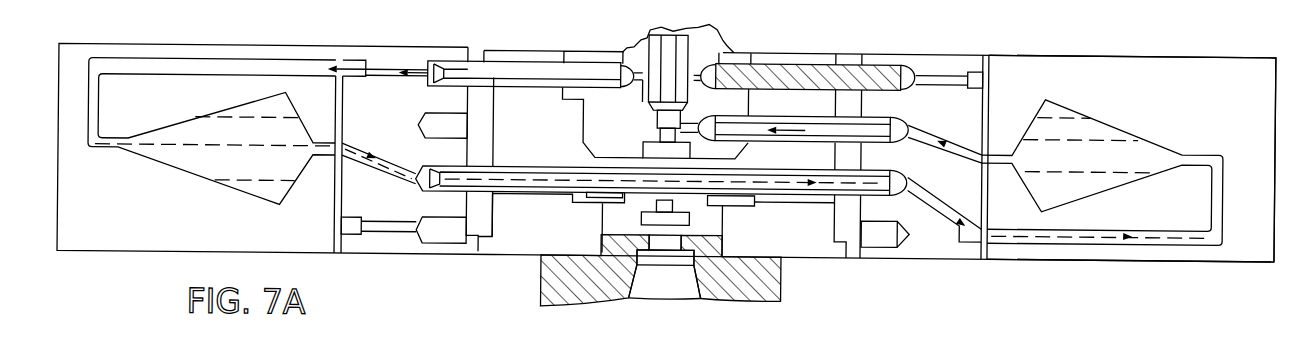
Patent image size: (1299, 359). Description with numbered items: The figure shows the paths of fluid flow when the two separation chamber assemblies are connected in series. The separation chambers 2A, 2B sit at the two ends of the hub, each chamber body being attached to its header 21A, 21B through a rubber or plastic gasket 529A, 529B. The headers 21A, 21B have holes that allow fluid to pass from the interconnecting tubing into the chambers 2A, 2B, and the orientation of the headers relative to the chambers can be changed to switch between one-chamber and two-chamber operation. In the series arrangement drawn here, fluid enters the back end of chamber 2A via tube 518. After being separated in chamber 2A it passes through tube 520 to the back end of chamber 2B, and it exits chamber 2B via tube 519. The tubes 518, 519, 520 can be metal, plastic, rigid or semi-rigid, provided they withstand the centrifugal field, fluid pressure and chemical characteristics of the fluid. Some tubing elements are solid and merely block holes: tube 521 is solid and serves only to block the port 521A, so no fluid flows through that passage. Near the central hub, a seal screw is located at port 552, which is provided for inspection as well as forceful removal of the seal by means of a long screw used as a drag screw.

The separation chamber 2A is at (207, 49).
The separation chamber 2B is at (1093, 52).
The header 21A is at (382, 256).
The header 21B is at (932, 253).
The tube 518 is at (511, 72).
The tube 519 is at (357, 153).
The tube 520 is at (510, 175).
The solid tube 521 is at (855, 70).
The port 521A is at (700, 70).
The gasket 529A is at (343, 107).
The gasket 529B is at (983, 55).
The port 552 is at (617, 213).